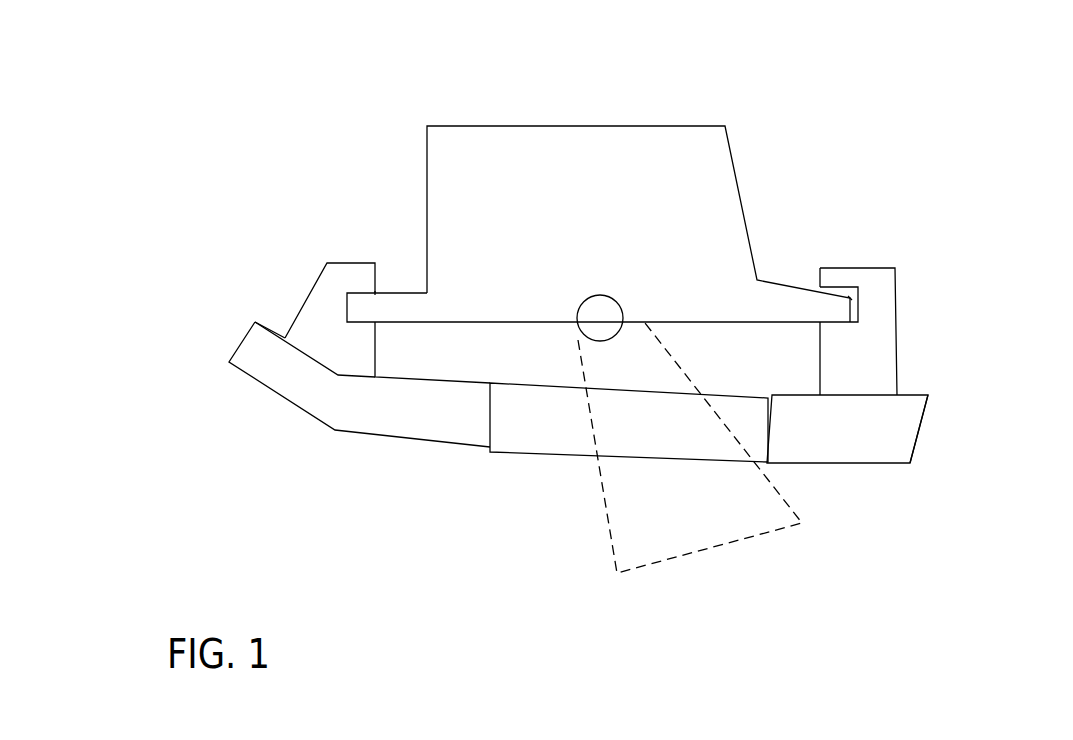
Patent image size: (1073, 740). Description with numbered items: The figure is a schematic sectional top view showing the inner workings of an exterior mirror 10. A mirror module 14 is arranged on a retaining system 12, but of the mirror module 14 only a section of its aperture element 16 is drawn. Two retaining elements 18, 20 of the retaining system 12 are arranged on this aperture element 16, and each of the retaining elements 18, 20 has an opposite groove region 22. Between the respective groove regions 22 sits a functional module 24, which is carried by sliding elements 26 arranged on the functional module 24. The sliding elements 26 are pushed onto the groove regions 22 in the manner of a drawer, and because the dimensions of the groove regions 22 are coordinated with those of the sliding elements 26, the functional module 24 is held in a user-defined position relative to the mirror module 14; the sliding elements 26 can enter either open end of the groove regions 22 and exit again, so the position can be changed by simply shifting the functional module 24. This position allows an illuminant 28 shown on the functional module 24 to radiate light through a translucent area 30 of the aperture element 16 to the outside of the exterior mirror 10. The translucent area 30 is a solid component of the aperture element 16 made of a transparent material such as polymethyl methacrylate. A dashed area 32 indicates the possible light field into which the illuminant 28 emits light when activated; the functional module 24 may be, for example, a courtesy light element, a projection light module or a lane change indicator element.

The exterior mirror 10 is at (937, 110).
The retaining system 12 is at (952, 362).
The mirror module 14 is at (923, 443).
The aperture element 16 is at (853, 440).
The retaining element 18 is at (328, 280).
The retaining element 20 is at (875, 326).
The groove regions 22 is at (377, 294).
The functional module 24 is at (642, 195).
The sliding elements 26 is at (353, 305).
The illuminant 28 is at (598, 293).
The translucent area 30 is at (528, 420).
The dashed area 32 is at (702, 542).